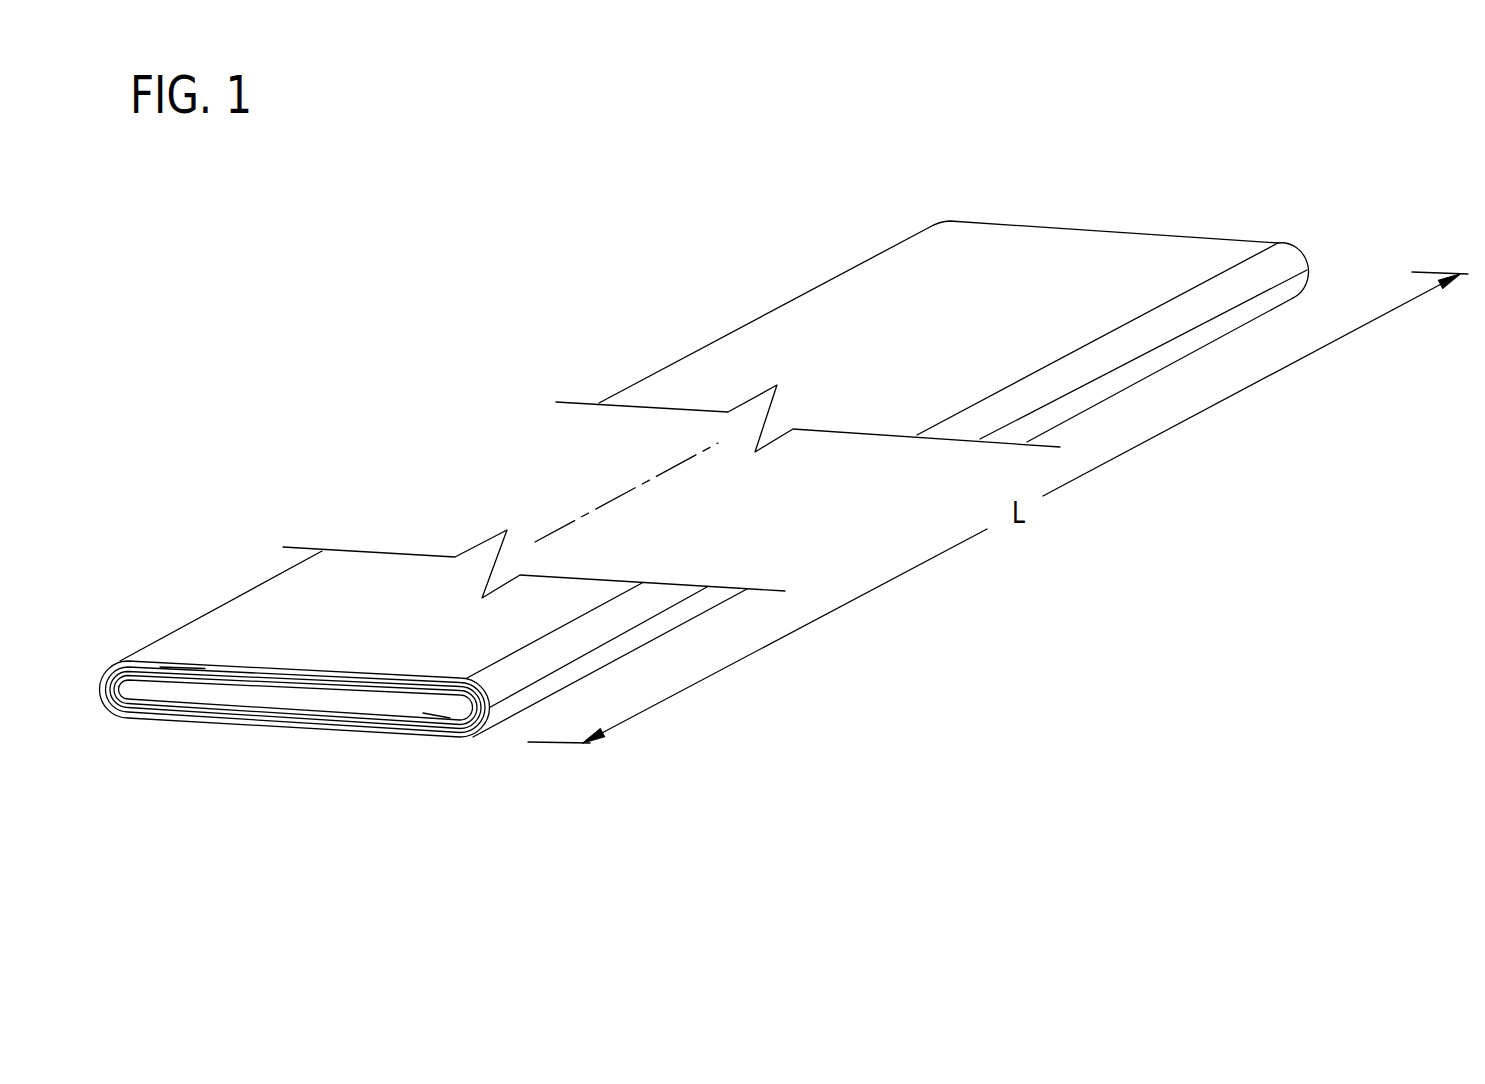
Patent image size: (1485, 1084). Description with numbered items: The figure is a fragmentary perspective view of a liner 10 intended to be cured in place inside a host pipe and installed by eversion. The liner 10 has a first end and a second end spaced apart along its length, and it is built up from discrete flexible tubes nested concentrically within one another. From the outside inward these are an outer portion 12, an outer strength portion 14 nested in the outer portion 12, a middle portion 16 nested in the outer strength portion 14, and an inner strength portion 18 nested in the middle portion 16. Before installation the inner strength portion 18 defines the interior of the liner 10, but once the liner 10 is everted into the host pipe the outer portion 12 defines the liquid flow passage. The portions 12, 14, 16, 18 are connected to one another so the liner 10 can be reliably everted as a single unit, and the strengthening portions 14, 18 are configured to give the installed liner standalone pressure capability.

The liner 10 is at (1133, 667).
The outer portion 12 is at (193, 652).
The outer strength portion 14 is at (115, 662).
The middle portion 16 is at (158, 713).
The inner strength portion 18 is at (337, 712).